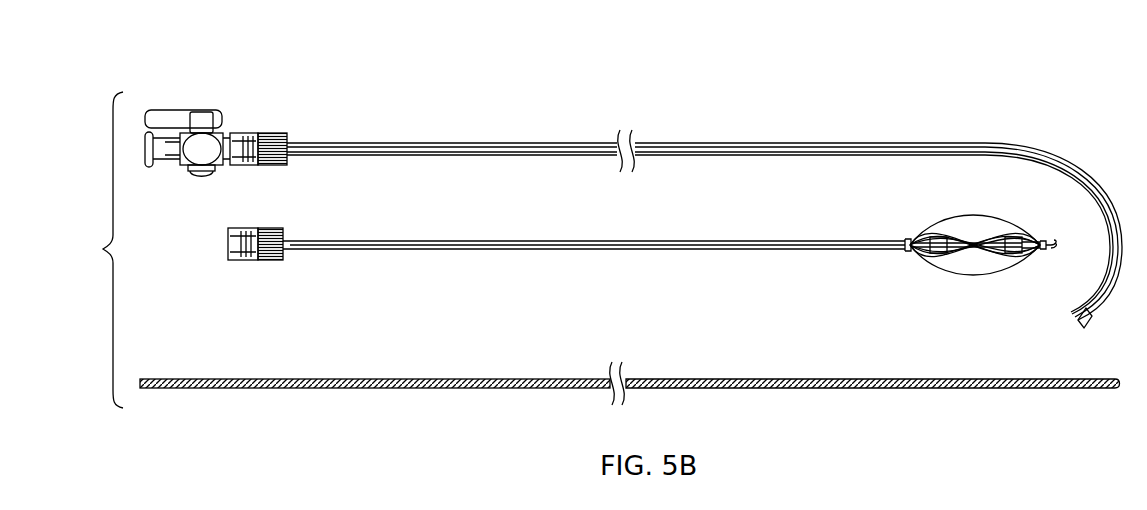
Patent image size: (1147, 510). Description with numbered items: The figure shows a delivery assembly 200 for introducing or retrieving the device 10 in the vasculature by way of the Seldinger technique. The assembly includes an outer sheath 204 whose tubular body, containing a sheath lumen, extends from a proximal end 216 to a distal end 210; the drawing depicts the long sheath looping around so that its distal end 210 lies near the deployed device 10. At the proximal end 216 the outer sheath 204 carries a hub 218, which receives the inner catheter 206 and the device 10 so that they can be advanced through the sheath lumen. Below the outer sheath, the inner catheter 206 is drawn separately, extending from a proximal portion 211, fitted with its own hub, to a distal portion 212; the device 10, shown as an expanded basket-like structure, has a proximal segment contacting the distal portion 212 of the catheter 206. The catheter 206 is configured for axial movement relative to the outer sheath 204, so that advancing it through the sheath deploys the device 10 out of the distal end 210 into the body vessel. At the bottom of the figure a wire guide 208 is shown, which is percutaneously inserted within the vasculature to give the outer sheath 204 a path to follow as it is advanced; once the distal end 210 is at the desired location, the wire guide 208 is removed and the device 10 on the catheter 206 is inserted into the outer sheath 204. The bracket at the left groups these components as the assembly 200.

The delivery assembly 200 is at (206, 57).
The hub 218 is at (208, 153).
The proximal end 216 is at (287, 133).
The outer sheath 204 is at (405, 143).
The distal end 210 is at (1078, 322).
The proximal portion 211 is at (338, 250).
The inner catheter 206 is at (430, 240).
The distal portion 212 is at (714, 240).
The device 10 is at (947, 200).
The wire guide 208 is at (237, 379).